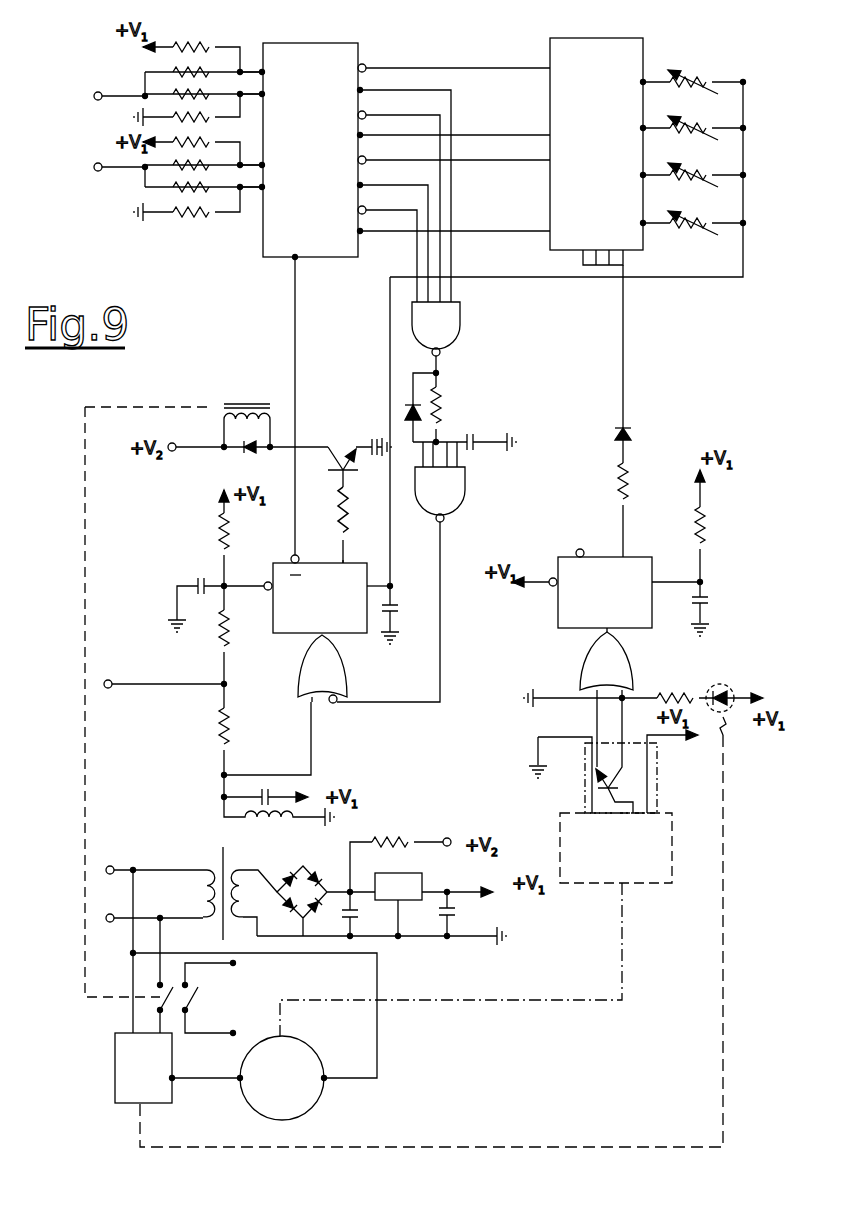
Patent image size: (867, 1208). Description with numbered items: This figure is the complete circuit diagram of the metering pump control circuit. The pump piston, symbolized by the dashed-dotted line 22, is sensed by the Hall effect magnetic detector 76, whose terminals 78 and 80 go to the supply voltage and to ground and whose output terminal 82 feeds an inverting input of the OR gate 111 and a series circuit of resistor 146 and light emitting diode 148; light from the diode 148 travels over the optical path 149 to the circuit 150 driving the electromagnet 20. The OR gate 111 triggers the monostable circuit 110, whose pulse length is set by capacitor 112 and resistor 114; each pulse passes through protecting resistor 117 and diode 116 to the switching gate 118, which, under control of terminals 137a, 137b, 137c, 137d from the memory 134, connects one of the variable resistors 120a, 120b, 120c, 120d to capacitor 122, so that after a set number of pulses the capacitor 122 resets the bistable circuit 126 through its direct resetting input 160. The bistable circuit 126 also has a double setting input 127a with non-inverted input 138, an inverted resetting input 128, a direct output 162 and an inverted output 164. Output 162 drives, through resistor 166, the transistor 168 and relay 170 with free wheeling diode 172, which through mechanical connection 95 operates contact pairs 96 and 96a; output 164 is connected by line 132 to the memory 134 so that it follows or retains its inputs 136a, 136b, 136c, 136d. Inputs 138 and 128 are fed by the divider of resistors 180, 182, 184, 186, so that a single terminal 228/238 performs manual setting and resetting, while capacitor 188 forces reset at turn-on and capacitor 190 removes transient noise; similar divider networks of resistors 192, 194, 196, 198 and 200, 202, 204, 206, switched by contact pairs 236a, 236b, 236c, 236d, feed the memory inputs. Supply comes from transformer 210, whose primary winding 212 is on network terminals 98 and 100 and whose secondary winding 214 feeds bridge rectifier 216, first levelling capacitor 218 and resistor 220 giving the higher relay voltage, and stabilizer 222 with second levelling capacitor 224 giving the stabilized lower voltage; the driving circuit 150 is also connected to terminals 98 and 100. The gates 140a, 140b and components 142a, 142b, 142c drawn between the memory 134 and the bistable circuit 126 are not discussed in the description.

The electromagnet 20 is at (313, 1096).
The dashed-dotted line 22 is at (470, 1000).
The Hall effect magnetic detector 76 is at (668, 821).
The terminal 78 is at (670, 740).
The terminal 80 is at (538, 736).
The output terminal 82 is at (618, 725).
The mechanical connection 95 is at (85, 756).
The contact pair 96 is at (154, 996).
The contact pair 96a is at (202, 996).
The network terminal 98 is at (107, 864).
The network terminal 100 is at (114, 927).
The monostable circuit 110 is at (563, 552).
The OR gate 111 is at (622, 664).
The capacitor 112 is at (708, 598).
The resistor 114 is at (706, 544).
The diode 116 is at (630, 435).
The protecting resistor 117 is at (630, 501).
The switching gate 118 is at (568, 157).
The variable resistor 120a is at (712, 76).
The variable resistor 120b is at (700, 124).
The variable resistor 120c is at (700, 171).
The variable resistor 120d is at (700, 218).
The capacitor 122 is at (396, 597).
The bistable circuit 126 is at (338, 616).
The double setting input 127a is at (340, 684).
The inverted resetting input 128 is at (240, 572).
The line 132 is at (292, 368).
The memory 134 is at (313, 150).
The memory input 136a is at (252, 58).
The memory input 136b is at (254, 100).
The memory input 136c is at (256, 174).
The memory input 136d is at (258, 195).
The control terminal 137a is at (497, 64).
The control terminal 137b is at (502, 134).
The control terminal 137c is at (510, 155).
The control terminal 137d is at (517, 224).
The non-inverted setting input 138 is at (324, 754).
The NAND gate 140a is at (461, 326).
The NAND gate 140b is at (463, 508).
The resistor 142a is at (446, 406).
The capacitor 142b is at (480, 449).
The diode 142c is at (408, 403).
The resistor 146 is at (679, 691).
The light emitting diode 148 is at (731, 678).
The optical path 149 is at (723, 994).
The driving circuit 150 is at (112, 1050).
The direct resetting input 160 is at (371, 576).
The direct output 162 is at (342, 560).
The inverted output 164 is at (293, 555).
The resistor 166 is at (348, 516).
The transistor 168 is at (337, 460).
The relay 170 is at (242, 407).
The free wheeling diode 172 is at (241, 455).
The resistor 180 is at (222, 550).
The resistor 182 is at (224, 646).
The resistor 184 is at (224, 740).
The resistor 186 is at (246, 818).
The capacitor 188 is at (198, 580).
The capacitor 190 is at (227, 796).
The resistor 192 is at (191, 43).
The resistor 194 is at (174, 70).
The resistor 196 is at (174, 92).
The resistor 198 is at (174, 115).
The resistor 200 is at (174, 140).
The resistor 202 is at (174, 163).
The resistor 204 is at (176, 185).
The resistor 206 is at (174, 210).
The transformer 210 is at (216, 853).
The primary winding 212 is at (202, 892).
The secondary winding 214 is at (248, 874).
The bridge rectifier 216 is at (310, 869).
The first levelling capacitor 218 is at (343, 933).
The resistor 220 is at (404, 838).
The stabilizer 222 is at (434, 906).
The second levelling capacitor 224 is at (442, 928).
The terminal 228 is at (118, 666).
The terminal 238 is at (159, 667).
The contact pair 236a is at (112, 82).
The contact pair 236b is at (107, 71).
The input terminal 236c is at (112, 153).
The input terminal 236d is at (104, 150).